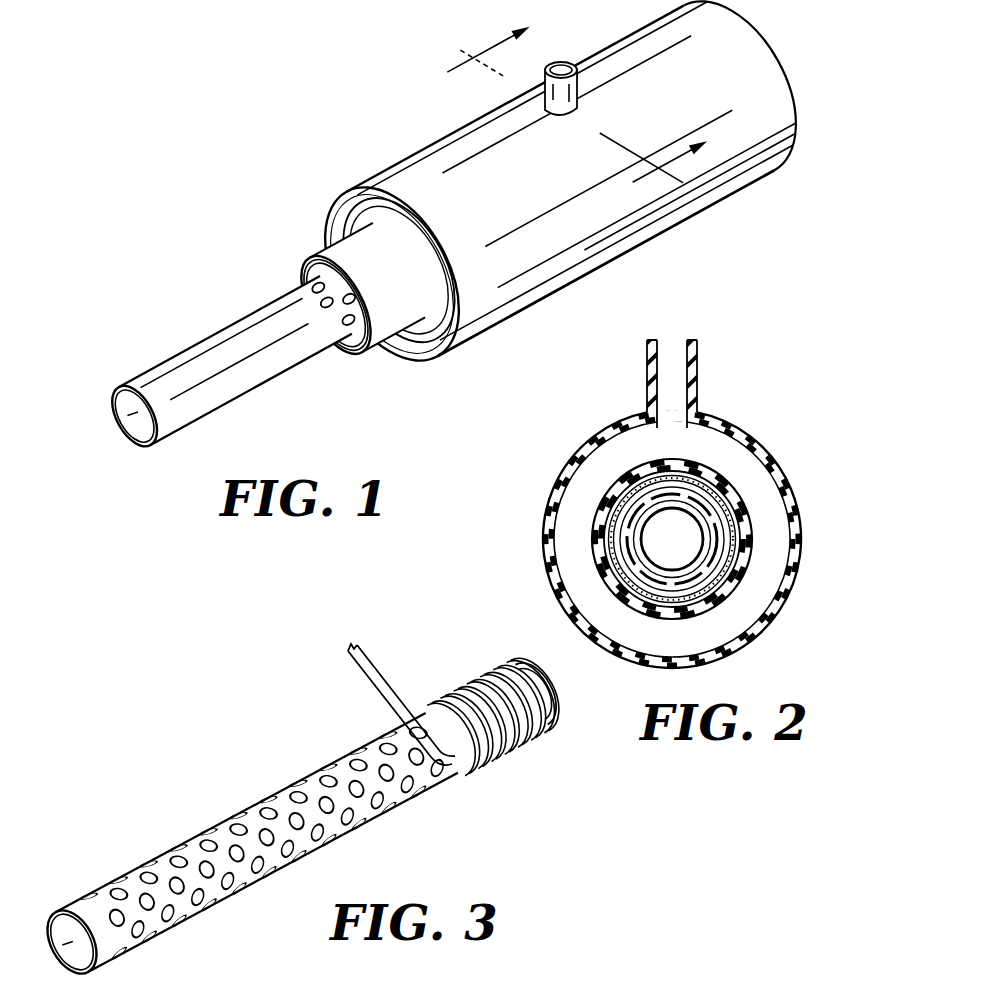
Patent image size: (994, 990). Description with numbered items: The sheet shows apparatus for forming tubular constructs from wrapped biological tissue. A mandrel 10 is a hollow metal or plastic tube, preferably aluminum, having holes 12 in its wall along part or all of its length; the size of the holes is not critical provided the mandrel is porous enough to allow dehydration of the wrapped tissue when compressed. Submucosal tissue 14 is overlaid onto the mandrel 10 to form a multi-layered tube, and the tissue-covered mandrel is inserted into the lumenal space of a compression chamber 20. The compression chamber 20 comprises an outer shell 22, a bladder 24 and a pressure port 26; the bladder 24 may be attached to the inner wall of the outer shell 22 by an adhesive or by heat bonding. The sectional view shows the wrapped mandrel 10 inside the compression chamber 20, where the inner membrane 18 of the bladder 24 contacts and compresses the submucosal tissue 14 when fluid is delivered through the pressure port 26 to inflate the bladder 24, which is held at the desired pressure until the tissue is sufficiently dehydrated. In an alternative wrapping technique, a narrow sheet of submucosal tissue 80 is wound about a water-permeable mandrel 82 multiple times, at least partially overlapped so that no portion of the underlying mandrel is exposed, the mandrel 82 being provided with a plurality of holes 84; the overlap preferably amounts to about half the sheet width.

In FIG. 1, the mandrel 10 is at (241, 346).
In FIG. 2, the mandrel 10 is at (638, 521).
In FIG. 1, the holes 12 is at (333, 322).
In FIG. 1, the submucosal tissue 14 is at (405, 292).
In FIG. 2, the submucosal tissue 14 is at (623, 557).
In FIG. 2, the inner membrane 18 is at (744, 518).
In FIG. 1, the compression chamber 20 is at (472, 227).
In FIG. 1, the outer shell 22 is at (771, 131).
In FIG. 2, the outer shell 22 is at (737, 431).
In FIG. 1, the bladder 24 is at (350, 206).
In FIG. 2, the bladder 24 is at (713, 618).
In FIG. 2, the pressure port 26 is at (673, 346).
In FIG. 3, the narrow sheet of submucosal tissue 80 is at (389, 684).
In FIG. 3, the mandrel 82 is at (541, 689).
In FIG. 3, the holes 84 is at (351, 814).